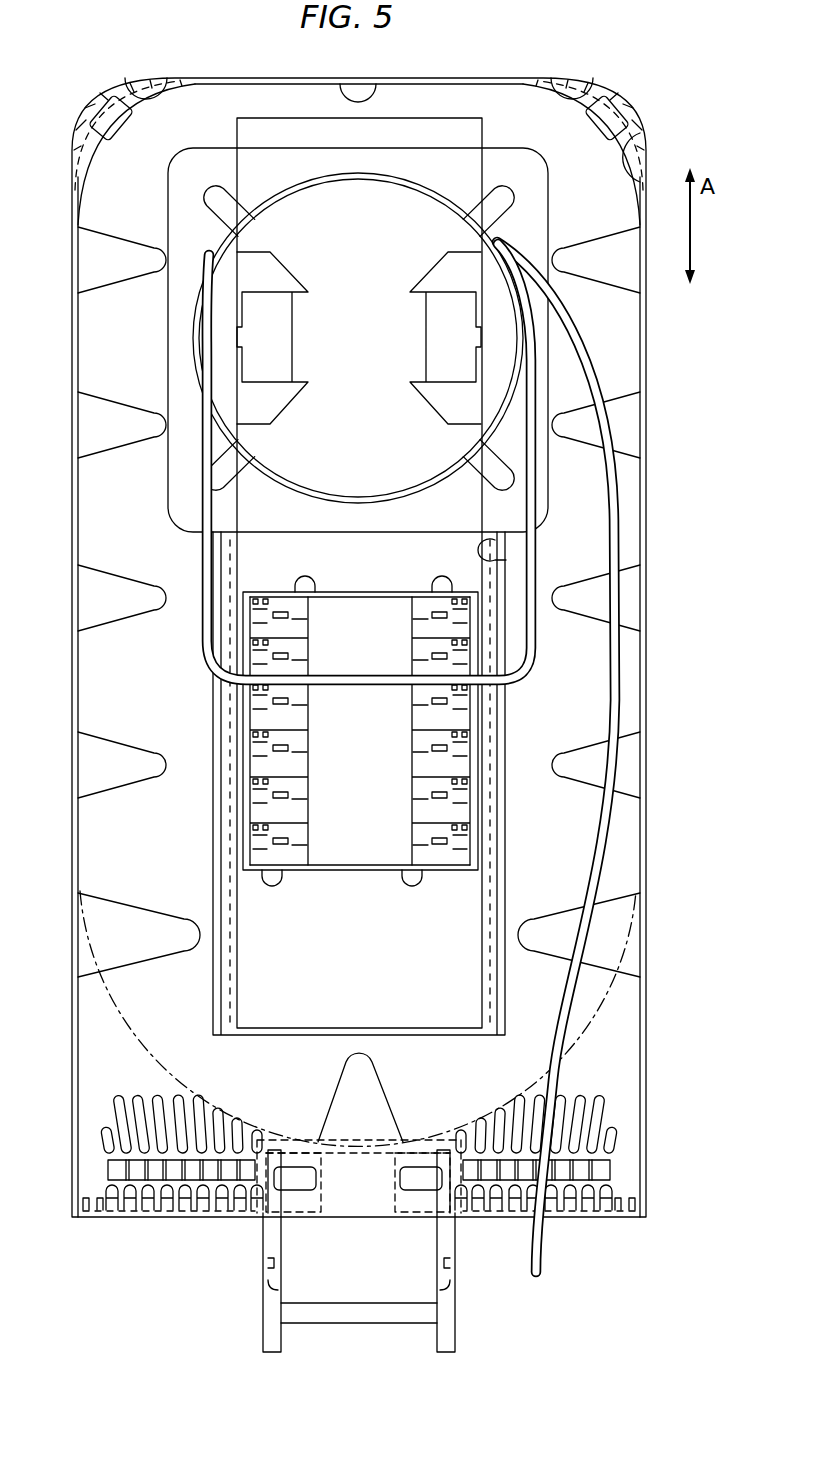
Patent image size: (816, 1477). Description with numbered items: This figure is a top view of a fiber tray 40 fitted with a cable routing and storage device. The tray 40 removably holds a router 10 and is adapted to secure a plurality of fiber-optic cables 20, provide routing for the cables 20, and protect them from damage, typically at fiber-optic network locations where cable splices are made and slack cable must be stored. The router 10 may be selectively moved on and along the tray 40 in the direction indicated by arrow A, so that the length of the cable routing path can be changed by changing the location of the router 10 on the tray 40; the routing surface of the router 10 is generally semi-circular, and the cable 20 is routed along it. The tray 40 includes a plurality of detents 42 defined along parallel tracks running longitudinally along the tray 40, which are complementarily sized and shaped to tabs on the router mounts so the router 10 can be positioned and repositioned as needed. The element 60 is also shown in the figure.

The router 10 is at (562, 384).
The fiber-optic cable 20 is at (575, 1012).
The tray 40 is at (656, 690).
The detents 42 is at (484, 562).
The circuit board / battery pack 60 is at (505, 747).